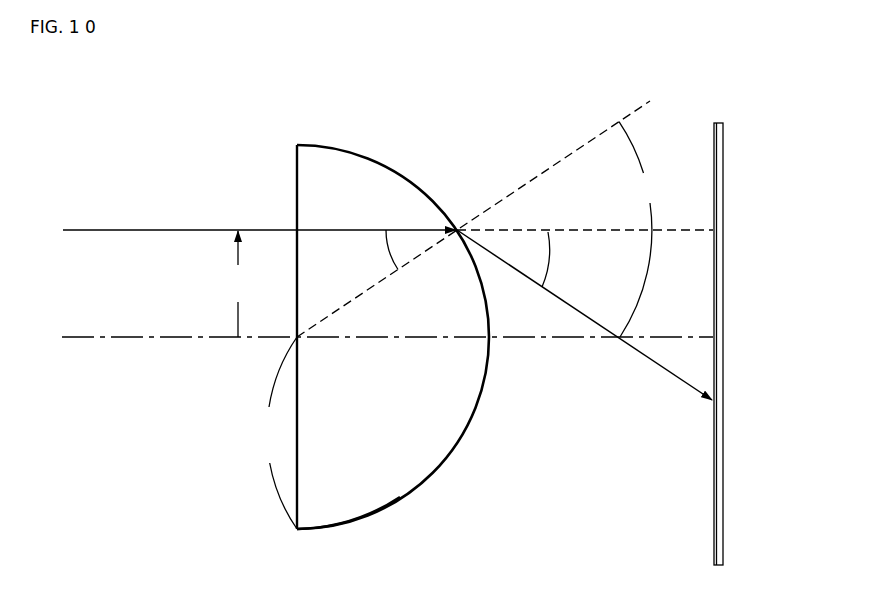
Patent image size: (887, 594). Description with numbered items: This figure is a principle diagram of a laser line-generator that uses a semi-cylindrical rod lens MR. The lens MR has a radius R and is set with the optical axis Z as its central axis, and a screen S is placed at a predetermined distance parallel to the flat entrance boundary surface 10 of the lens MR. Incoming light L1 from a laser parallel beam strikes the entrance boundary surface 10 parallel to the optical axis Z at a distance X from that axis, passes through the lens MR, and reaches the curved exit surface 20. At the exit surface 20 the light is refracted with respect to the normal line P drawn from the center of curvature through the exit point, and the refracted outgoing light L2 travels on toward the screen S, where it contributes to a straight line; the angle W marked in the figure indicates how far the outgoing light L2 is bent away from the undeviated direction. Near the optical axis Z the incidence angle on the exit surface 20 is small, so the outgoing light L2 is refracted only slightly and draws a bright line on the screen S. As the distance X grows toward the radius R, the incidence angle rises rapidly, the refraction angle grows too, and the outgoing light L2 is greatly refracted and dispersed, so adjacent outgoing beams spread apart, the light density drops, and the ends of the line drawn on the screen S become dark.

The entrance boundary surface 10 is at (297, 178).
The exit surface 20 is at (485, 391).
The semi-cylindrical rod lens MR is at (436, 472).
The screen S is at (725, 152).
The incoming light L1 is at (146, 229).
The outgoing light L2 is at (650, 363).
The optical axis Z is at (146, 338).
The distance X is at (238, 284).
The radius R is at (279, 433).
The normal line P is at (515, 186).
The refraction angle W is at (559, 259).